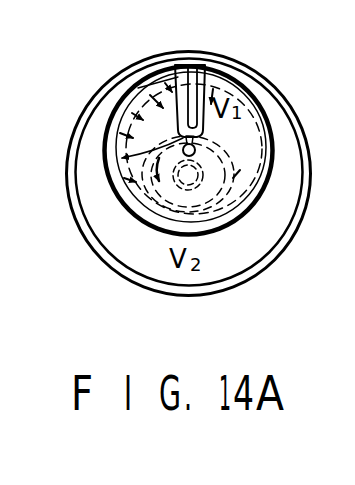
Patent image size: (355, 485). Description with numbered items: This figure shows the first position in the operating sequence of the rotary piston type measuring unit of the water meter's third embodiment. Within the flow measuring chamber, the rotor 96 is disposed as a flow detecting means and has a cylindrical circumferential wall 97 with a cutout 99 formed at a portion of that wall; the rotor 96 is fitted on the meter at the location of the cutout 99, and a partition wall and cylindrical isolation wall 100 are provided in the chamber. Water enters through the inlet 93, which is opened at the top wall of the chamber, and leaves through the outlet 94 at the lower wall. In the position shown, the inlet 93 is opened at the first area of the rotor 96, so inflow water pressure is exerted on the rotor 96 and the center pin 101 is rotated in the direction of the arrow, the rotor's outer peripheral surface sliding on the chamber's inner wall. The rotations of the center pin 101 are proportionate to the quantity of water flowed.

The inlet 93 is at (112, 109).
The outlet 94 is at (269, 100).
The rotor 96 is at (125, 213).
The cylindrical circumferential wall 97 is at (225, 207).
The cutout 99 is at (208, 81).
The cylindrical isolation wall 100 is at (234, 178).
The center pin 101 is at (116, 156).